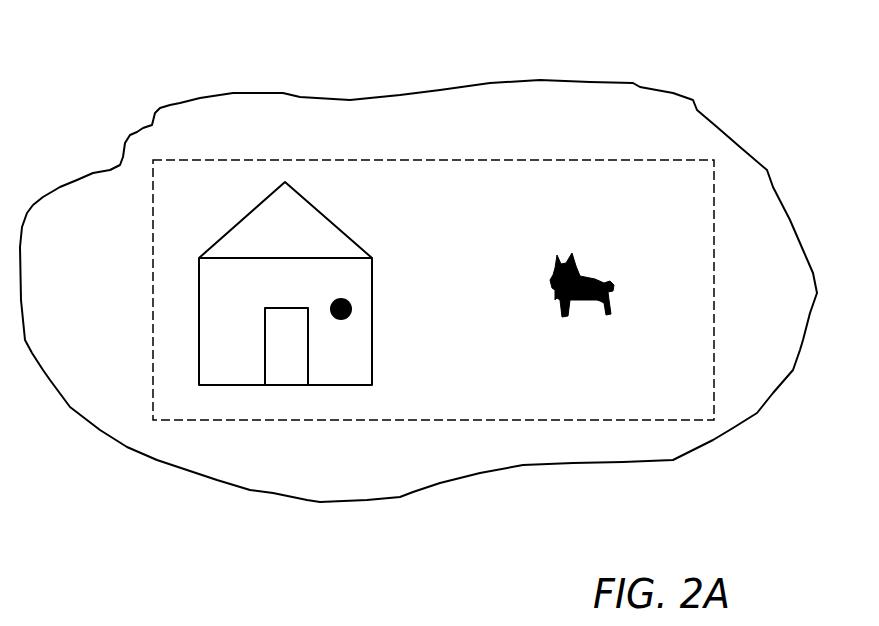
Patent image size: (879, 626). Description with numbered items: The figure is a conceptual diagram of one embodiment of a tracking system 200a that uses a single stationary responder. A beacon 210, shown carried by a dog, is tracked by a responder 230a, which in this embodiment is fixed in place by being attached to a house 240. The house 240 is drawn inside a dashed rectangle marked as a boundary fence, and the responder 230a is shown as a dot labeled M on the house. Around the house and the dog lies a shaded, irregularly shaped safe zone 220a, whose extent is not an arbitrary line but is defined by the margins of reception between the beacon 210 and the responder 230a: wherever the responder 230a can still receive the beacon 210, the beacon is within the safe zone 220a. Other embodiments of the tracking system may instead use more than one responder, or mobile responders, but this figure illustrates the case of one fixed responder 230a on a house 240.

The tracking system 200a is at (705, 94).
The beacon 210 is at (565, 318).
The safe zone 220a is at (530, 463).
The responder 230a is at (331, 319).
The house 240 is at (197, 330).